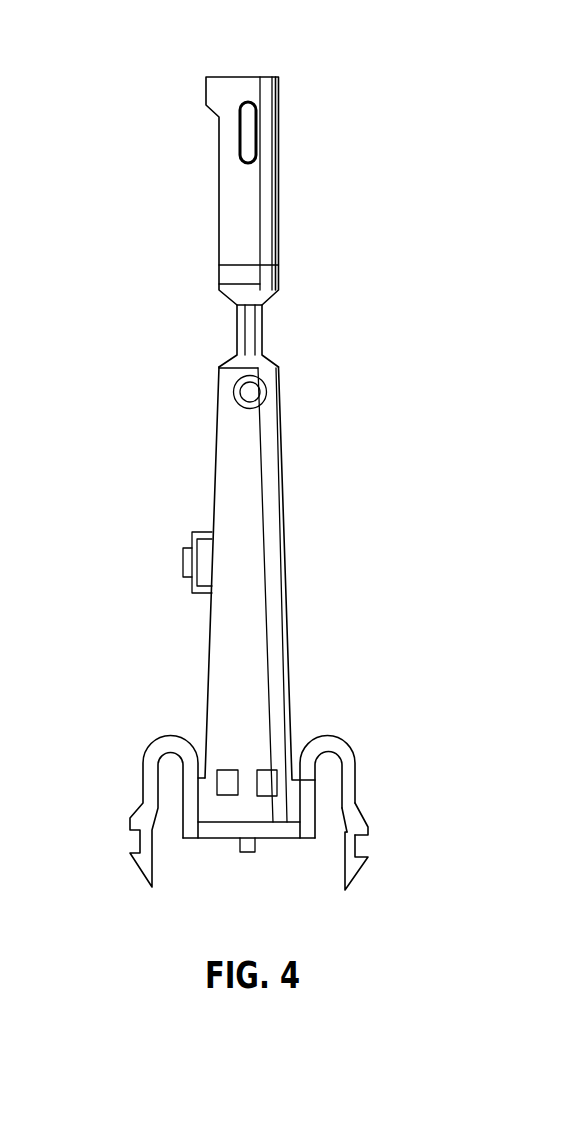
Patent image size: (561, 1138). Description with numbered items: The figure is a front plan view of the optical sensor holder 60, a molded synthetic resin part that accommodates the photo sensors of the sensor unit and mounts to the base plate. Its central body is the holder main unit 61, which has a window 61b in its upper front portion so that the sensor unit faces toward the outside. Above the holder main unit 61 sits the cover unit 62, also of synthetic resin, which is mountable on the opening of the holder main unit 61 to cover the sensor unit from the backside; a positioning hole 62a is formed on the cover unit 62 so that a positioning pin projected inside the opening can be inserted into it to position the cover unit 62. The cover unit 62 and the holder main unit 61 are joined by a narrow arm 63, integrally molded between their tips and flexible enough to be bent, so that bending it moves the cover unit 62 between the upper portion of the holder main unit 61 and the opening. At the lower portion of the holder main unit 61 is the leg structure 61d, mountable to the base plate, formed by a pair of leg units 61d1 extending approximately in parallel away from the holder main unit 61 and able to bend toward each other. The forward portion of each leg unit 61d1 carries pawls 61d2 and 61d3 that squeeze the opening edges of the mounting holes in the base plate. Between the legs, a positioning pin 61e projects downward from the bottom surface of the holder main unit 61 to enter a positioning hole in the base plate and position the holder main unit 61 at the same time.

The optical sensor holder 60 is at (333, 80).
The cover unit 62 is at (99, 272).
The positioning hole 62a is at (250, 140).
The arm 63 is at (99, 292).
The holder main unit 61 is at (99, 894).
The window 61b is at (253, 393).
The leg structure 61d is at (472, 712).
The leg unit 61d1 is at (357, 762).
The pawl 61d2 is at (369, 815).
The pawl 61d3 is at (369, 868).
The positioning pin 61e is at (257, 848).